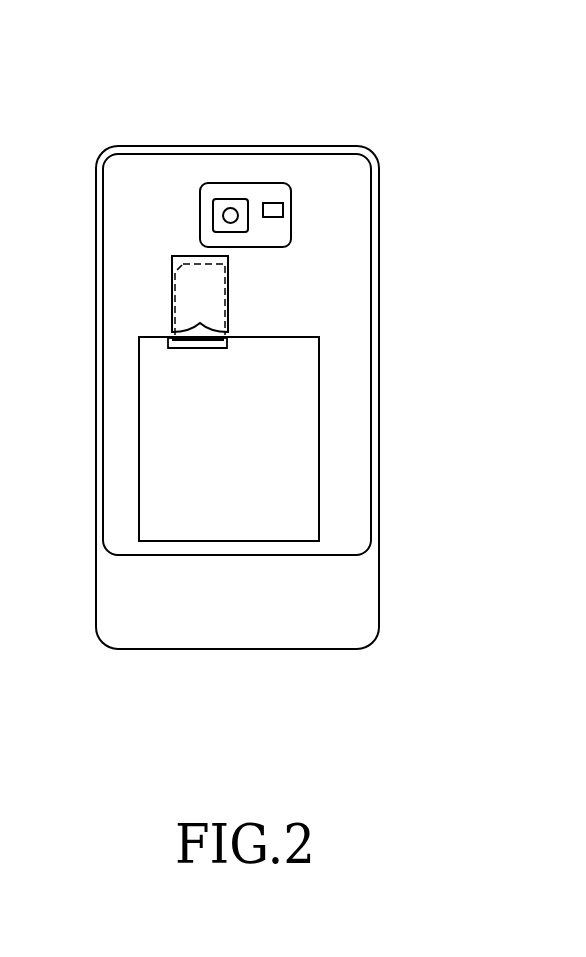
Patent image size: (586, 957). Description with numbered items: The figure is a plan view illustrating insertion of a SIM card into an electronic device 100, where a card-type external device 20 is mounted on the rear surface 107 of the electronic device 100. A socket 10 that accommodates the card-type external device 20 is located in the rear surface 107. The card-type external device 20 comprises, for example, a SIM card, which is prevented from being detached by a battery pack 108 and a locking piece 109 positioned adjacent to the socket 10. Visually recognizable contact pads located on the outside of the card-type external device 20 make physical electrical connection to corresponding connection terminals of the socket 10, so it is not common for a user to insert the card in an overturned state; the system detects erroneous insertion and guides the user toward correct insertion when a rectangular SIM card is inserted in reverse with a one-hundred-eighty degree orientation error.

The electronic device 100 is at (272, 330).
The rear surface 107 is at (318, 306).
The battery pack 108 is at (319, 438).
The socket 10 is at (172, 262).
The card-type external device 20 is at (168, 344).
The locking piece 109 is at (203, 348).